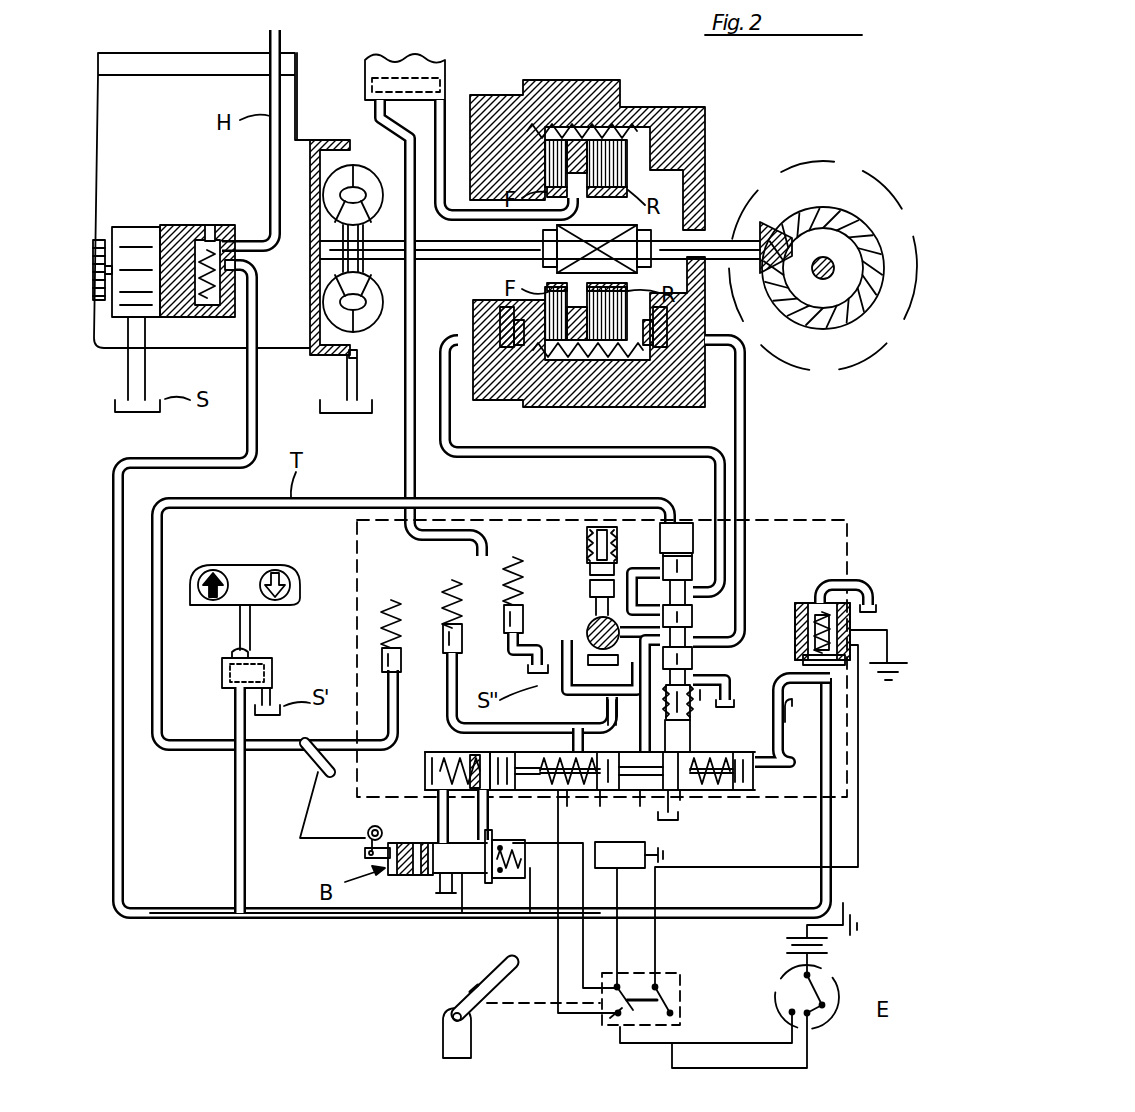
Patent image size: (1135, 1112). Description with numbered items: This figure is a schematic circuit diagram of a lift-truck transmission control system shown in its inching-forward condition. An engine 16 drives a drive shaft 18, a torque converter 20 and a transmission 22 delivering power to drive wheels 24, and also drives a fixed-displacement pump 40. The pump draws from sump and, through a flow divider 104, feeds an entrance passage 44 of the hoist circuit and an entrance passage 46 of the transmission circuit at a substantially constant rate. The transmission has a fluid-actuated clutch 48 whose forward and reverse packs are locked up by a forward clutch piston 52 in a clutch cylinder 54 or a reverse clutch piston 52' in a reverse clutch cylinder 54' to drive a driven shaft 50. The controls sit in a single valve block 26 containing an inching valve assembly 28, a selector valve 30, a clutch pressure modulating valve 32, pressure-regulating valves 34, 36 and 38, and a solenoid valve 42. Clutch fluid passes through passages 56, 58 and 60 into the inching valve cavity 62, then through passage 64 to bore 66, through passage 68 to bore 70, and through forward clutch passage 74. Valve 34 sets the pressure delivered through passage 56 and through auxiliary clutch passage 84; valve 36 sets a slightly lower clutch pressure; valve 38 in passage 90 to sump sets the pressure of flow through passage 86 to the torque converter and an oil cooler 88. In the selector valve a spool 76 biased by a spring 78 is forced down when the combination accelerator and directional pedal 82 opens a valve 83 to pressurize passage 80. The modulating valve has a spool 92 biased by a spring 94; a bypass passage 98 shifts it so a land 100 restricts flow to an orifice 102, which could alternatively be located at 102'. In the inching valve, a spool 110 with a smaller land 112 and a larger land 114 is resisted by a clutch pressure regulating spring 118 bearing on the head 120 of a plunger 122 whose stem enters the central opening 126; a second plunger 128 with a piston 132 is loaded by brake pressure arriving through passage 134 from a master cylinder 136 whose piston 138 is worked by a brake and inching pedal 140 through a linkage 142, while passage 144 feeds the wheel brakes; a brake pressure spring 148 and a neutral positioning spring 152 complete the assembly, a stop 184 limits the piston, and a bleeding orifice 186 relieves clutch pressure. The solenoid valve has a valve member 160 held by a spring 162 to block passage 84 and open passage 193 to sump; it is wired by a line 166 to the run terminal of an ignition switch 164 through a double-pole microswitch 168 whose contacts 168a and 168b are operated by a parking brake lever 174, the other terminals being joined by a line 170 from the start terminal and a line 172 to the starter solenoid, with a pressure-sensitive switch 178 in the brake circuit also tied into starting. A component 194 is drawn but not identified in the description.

The engine 16 is at (299, 84).
The drive shaft 18 is at (440, 262).
The torque converter 20 is at (356, 176).
The transmission 22 is at (625, 103).
The drive wheels 24 is at (850, 165).
The valve block 26 is at (343, 560).
The inching valve assembly 28 is at (590, 797).
The forward-reverse clutch selector valve 30 is at (662, 553).
The clutch pressure modulating valve 32 is at (580, 553).
The pressure-regulating valve 34 is at (393, 600).
The pressure-regulating valve 36 is at (452, 578).
The pressure-regulating valve 38 is at (512, 558).
The pump 40 is at (136, 227).
The solenoid valve 42 is at (793, 598).
The entrance passage 44 is at (282, 33).
The entrance passage 46 is at (258, 378).
The fluid-actuated clutch 48 is at (643, 287).
The driven shaft 50 is at (723, 233).
The clutch piston 52 is at (508, 375).
The reverse clutch piston 52' is at (663, 366).
The clutch cylinder 54 is at (482, 365).
The reverse clutch cylinder 54' is at (697, 322).
The passage 56 is at (236, 819).
The passage 58 is at (344, 740).
The passage 60 is at (488, 717).
The inching valve cavity 62 is at (622, 740).
The passage 64 is at (642, 710).
The bore 66 is at (588, 603).
The passage 68 is at (655, 612).
The bore 70 is at (694, 660).
The forward clutch passage 74 is at (609, 450).
The valve spool 76 is at (697, 575).
The spring 78 is at (712, 713).
The passage 80 is at (649, 497).
The combination accelerator and directional control pedal 82 is at (224, 562).
The valve 83 is at (221, 675).
The auxiliary clutch passage 84 is at (297, 921).
The passage 86 is at (404, 466).
The oil cooler 88 is at (447, 58).
The passage 90 is at (493, 661).
The valve spool 92 is at (588, 592).
The spring 94 is at (585, 560).
The bypass passage 98 is at (567, 697).
The land 100 is at (584, 618).
The orifice 102 is at (573, 635).
The orifice location 102' is at (722, 491).
The flow divider 104 is at (213, 240).
The inching valve spool 110 is at (641, 791).
The land 112 is at (601, 791).
The land 114 is at (683, 789).
The clutch pressure regulating spring 118 is at (708, 752).
The enlarged head 120 is at (752, 776).
The plunger 122 is at (720, 755).
The central opening 126 is at (660, 817).
The second plunger 128 is at (578, 742).
The piston 132 is at (484, 795).
The passage 134 is at (440, 819).
The master cylinder 136 is at (463, 915).
The piston 138 is at (428, 874).
The combination brake and inching pedal 140 is at (333, 790).
The linkage 142 is at (365, 841).
The passage 144 is at (445, 895).
The brake pressure spring 148 is at (545, 791).
The neutral positioning spring 152 is at (568, 790).
The valve member 160 is at (834, 662).
The spring 162 is at (838, 631).
The ignition switch 164 is at (838, 983).
The line 166 is at (862, 822).
The double-pole microswitch 168 is at (681, 978).
The contact 168a is at (681, 1000).
The contact 168b is at (618, 1025).
The line 170 is at (640, 1045).
The line 172 is at (618, 950).
The manual parking brake lever 174 is at (441, 1032).
The pressure-sensitive switch 178 is at (511, 880).
The stop 184 is at (452, 750).
The bleeding orifice 186 is at (673, 795).
The passage 193 is at (803, 719).
The solenoid 194 is at (631, 868).